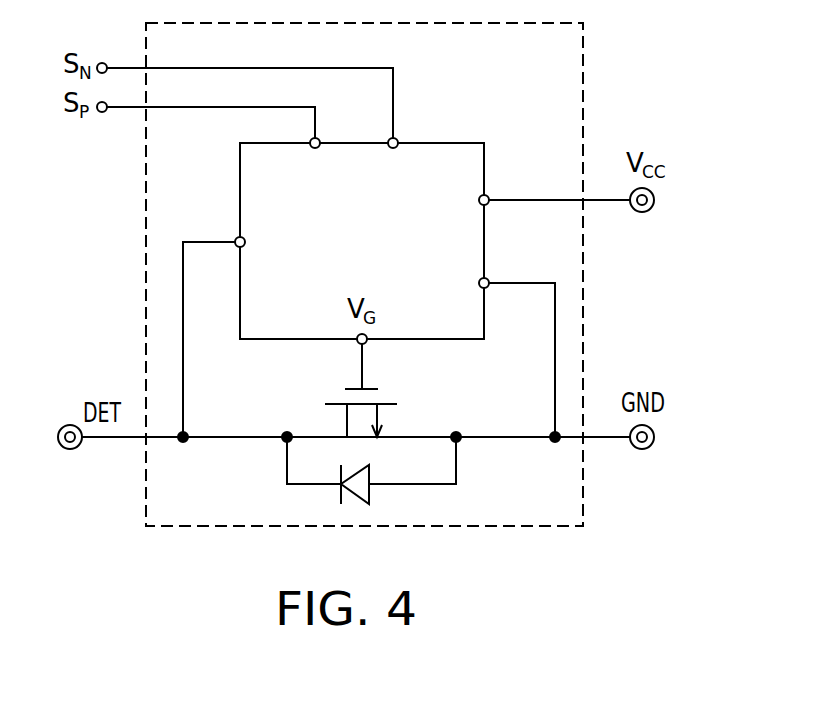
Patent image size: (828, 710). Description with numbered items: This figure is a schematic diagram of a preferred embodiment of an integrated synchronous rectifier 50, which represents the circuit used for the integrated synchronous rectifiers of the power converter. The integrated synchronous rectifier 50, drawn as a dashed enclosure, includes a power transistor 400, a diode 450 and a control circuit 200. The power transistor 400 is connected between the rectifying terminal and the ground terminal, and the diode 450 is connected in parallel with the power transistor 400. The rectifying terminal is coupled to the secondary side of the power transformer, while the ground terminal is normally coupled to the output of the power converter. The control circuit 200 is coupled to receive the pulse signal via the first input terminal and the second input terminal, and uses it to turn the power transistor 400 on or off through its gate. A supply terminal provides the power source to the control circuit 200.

The integrated synchronous rectifier 50 is at (553, 58).
The control circuit 200 is at (438, 167).
The power transistor 400 is at (392, 420).
The diode 450 is at (327, 472).